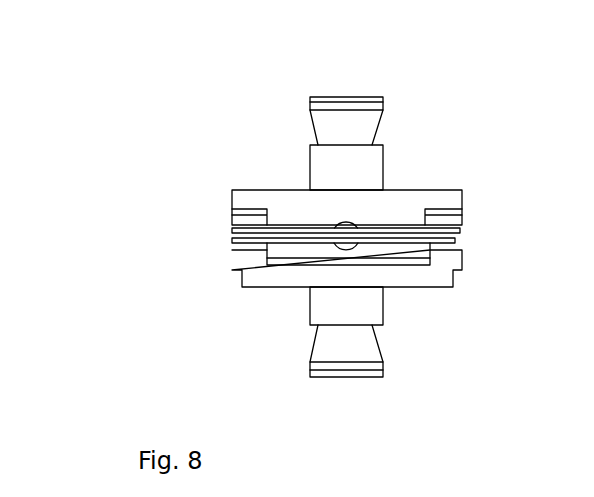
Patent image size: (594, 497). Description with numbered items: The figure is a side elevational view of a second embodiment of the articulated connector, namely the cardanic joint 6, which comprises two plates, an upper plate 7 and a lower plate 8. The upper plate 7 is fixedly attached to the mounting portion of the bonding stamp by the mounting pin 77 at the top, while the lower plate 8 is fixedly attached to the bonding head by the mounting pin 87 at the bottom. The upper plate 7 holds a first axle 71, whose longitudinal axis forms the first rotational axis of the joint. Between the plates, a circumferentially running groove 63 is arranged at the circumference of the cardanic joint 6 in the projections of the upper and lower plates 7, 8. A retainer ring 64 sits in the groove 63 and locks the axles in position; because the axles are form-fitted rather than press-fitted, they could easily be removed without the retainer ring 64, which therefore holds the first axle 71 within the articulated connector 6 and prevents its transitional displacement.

The cardanic joint 6 is at (157, 295).
The upper plate 7 is at (252, 194).
The lower plate 8 is at (253, 284).
The groove 63 is at (452, 242).
The retainer ring 64 is at (237, 238).
The first axle 71 is at (345, 222).
The mounting pin 77 is at (343, 138).
The mounting pin 87 is at (333, 335).